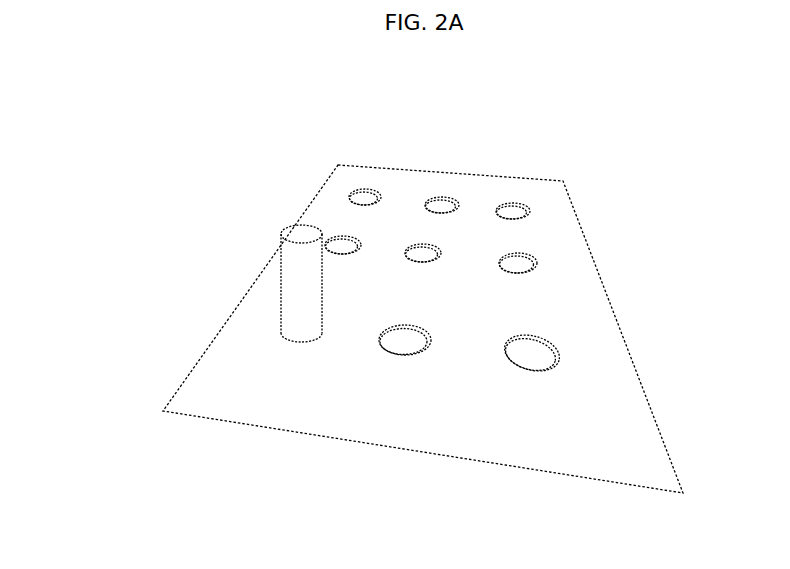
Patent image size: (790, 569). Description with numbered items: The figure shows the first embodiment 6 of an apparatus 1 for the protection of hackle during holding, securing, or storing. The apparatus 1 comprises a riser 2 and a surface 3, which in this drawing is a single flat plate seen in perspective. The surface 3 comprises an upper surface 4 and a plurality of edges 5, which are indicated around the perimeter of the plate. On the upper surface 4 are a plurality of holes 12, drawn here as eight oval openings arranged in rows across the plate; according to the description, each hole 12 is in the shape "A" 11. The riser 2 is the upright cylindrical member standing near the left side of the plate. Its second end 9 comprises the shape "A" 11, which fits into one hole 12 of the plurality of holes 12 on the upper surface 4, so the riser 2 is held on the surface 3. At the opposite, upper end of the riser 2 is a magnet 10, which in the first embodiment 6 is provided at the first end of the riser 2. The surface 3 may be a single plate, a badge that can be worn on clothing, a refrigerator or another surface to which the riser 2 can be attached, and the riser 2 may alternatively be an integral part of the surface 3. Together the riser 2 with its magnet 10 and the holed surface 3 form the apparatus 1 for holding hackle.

The apparatus 1 is at (379, 311).
The first embodiment 6 is at (142, 151).
The riser 2 is at (291, 283).
The surface 3 is at (395, 224).
The upper surface 4 is at (460, 397).
The edges 5 is at (392, 170).
The second end 9 is at (289, 400).
The shape "A" 11 is at (302, 346).
The magnet 10 is at (288, 227).
The plurality of holes 12 is at (441, 199).